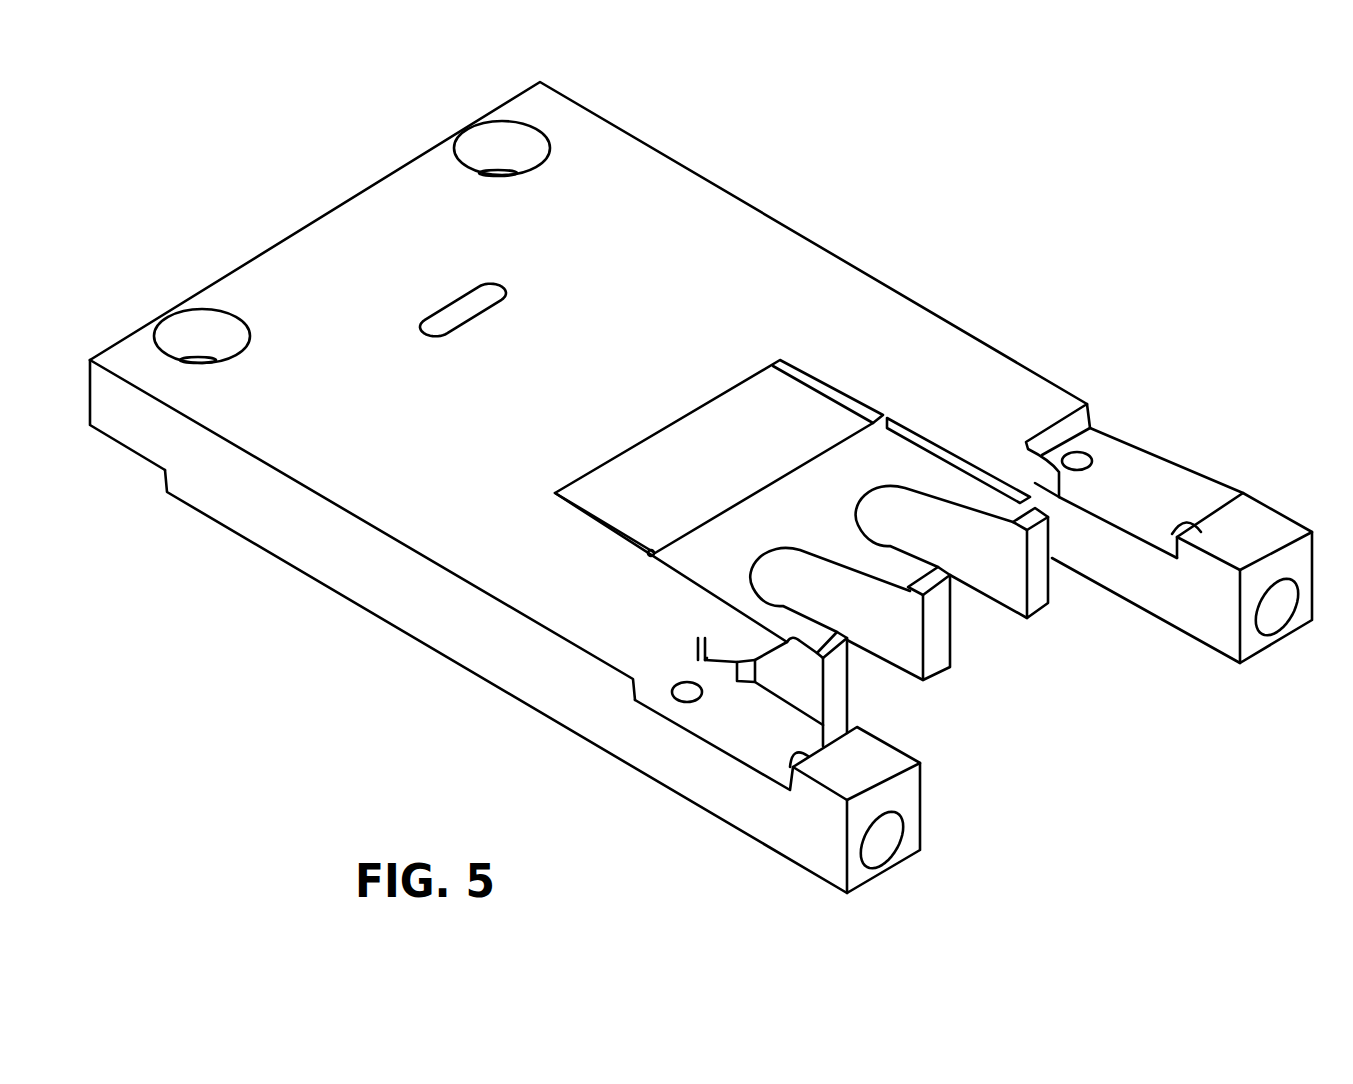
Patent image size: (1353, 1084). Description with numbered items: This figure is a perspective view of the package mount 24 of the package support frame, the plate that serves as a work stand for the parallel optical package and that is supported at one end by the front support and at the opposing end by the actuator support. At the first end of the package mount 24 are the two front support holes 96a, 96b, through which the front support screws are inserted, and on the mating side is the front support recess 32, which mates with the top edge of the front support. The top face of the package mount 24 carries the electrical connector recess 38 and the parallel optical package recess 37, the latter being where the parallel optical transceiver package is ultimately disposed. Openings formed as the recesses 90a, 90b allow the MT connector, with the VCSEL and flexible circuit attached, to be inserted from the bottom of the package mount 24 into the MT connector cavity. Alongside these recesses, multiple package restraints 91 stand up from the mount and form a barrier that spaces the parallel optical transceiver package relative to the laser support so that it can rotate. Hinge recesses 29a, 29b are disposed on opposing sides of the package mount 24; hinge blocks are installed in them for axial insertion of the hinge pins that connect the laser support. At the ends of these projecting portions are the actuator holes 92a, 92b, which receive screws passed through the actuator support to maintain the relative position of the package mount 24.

The package mount 24 is at (788, 283).
The front support hole 96a is at (180, 337).
The front support hole 96b is at (485, 150).
The front support recess 32 is at (137, 458).
The electrical connector recess 38 is at (787, 417).
The parallel optical package recess 37 is at (887, 463).
The recess 90a is at (970, 602).
The recess 90b is at (880, 670).
The package restraint 91 is at (833, 657).
The hinge recess 29a is at (737, 738).
The hinge recess 29b is at (1137, 483).
The actuator hole 92a is at (880, 843).
The actuator hole 92b is at (1273, 613).